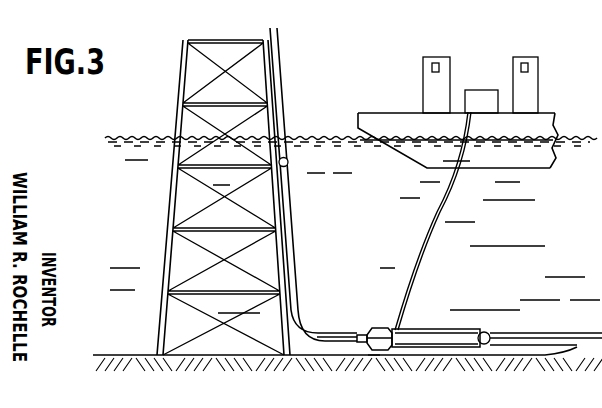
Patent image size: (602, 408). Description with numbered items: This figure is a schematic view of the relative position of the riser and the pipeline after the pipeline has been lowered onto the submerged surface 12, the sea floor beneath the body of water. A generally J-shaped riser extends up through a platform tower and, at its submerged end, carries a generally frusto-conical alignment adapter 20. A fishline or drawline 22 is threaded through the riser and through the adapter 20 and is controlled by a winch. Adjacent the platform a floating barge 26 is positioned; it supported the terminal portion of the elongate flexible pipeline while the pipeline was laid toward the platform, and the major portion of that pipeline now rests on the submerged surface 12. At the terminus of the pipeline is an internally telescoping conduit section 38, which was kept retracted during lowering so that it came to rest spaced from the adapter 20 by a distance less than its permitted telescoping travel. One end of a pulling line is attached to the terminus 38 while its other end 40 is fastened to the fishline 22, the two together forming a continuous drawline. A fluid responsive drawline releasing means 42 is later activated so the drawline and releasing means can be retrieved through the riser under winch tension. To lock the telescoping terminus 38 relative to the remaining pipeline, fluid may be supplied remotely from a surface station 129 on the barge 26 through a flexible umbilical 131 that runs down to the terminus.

The submerged surface 12 is at (585, 348).
The alignment adapter 20 is at (322, 321).
The drawline 22 is at (283, 124).
The floating barge 26 is at (548, 100).
The telescoping conduit section 38 is at (392, 326).
The other end of pulling line 40 is at (288, 164).
The drawline releasing means 42 is at (373, 356).
The surface station 129 is at (487, 93).
The flexible umbilical 131 is at (447, 200).